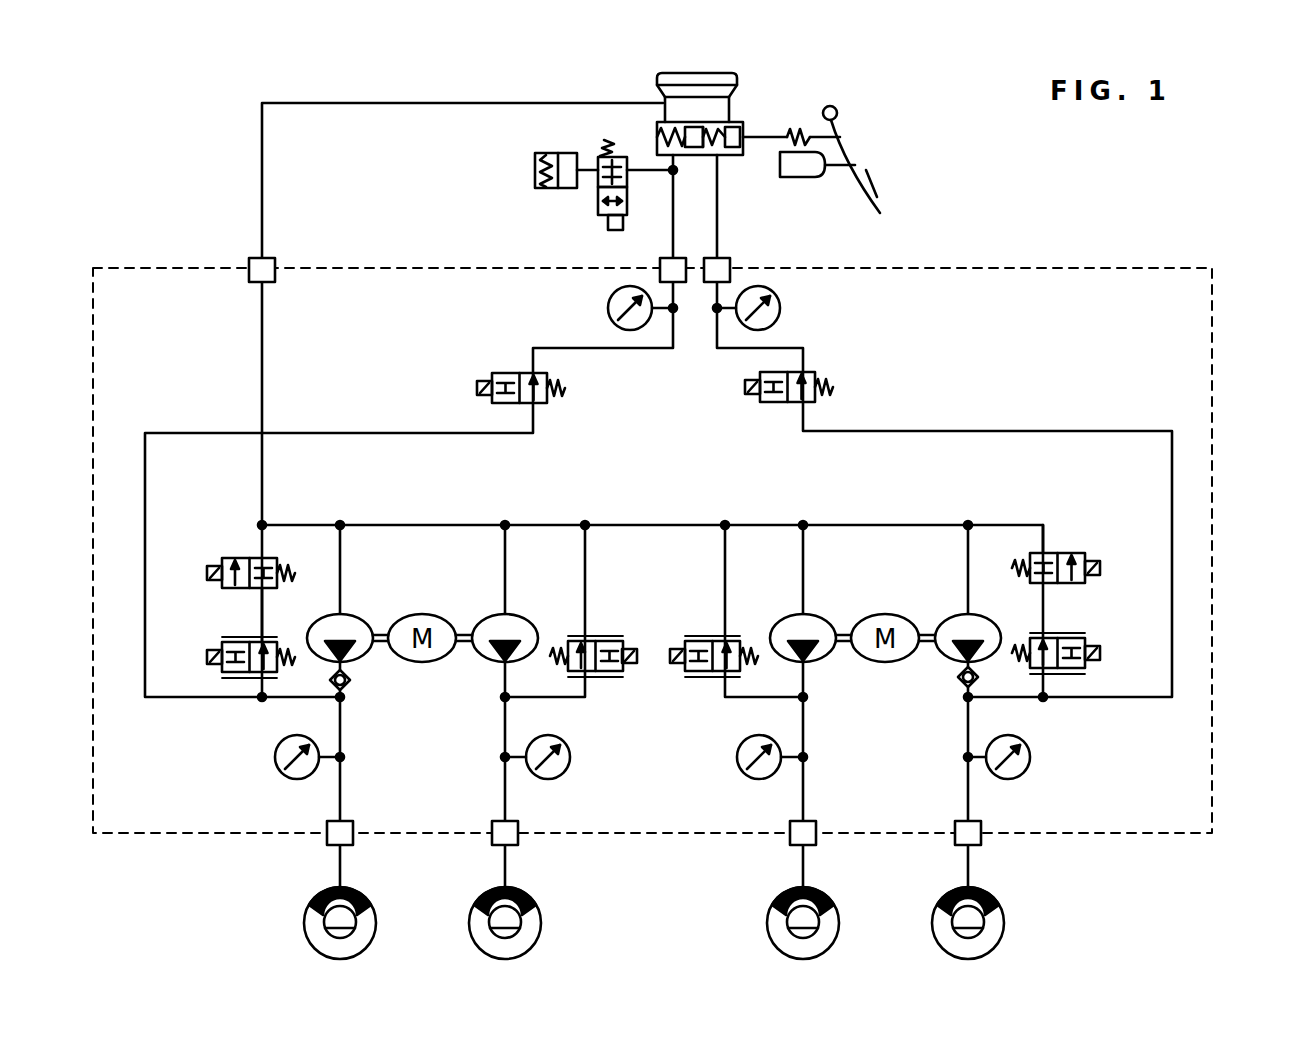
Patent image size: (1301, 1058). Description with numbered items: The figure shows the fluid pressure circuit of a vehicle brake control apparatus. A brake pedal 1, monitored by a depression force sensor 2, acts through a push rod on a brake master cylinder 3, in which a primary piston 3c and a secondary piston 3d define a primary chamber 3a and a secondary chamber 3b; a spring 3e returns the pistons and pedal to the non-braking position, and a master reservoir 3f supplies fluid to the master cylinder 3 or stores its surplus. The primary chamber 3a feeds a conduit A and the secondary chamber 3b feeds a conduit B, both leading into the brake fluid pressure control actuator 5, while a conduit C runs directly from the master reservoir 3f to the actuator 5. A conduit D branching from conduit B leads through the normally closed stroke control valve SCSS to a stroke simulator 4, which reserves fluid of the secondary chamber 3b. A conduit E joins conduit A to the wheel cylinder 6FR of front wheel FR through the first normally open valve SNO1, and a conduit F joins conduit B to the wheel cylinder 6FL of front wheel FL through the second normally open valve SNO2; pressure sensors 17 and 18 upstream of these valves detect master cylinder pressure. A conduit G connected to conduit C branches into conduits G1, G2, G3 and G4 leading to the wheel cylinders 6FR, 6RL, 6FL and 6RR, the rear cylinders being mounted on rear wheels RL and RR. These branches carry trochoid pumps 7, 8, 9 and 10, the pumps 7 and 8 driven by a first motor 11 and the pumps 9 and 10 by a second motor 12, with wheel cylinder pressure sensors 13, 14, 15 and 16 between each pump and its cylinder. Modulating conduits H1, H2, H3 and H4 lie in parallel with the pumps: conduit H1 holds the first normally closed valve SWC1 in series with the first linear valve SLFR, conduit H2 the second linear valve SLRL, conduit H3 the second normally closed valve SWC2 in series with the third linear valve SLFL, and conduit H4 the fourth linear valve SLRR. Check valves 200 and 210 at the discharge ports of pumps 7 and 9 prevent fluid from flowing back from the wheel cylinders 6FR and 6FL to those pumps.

The brake pedal 1 is at (870, 175).
The depression force sensor 2 is at (815, 177).
The brake master cylinder 3 is at (730, 106).
The primary chamber 3a is at (718, 135).
The secondary chamber 3b is at (673, 155).
The primary piston 3c is at (743, 125).
The secondary piston 3d is at (689, 128).
The spring 3e is at (717, 155).
The master reservoir 3f is at (665, 76).
The stroke simulator 4 is at (535, 172).
The brake fluid pressure control actuator 5 is at (1212, 278).
The first pump 7 is at (955, 663).
The second pump 8 is at (815, 663).
The third pump 9 is at (355, 663).
The fourth pump 10 is at (495, 663).
The first motor 11 is at (885, 663).
The second motor 12 is at (424, 663).
The first pressure sensor 13 is at (1008, 780).
The second pressure sensor 14 is at (752, 780).
The third pressure sensor 15 is at (290, 780).
The fourth pressure sensor 16 is at (553, 780).
The M/C pressure sensor 17 is at (780, 308).
The M/C pressure sensor 18 is at (608, 308).
The check valve 200 is at (972, 680).
The check valve 210 is at (332, 682).
The wheel cylinder 6FL is at (361, 895).
The wheel cylinder 6RR is at (526, 895).
The wheel cylinder 6RL is at (823, 895).
The wheel cylinder 6FR is at (990, 895).
The front wheel FL is at (376, 928).
The rear wheel RR is at (541, 928).
The rear wheel RL is at (839, 928).
The front wheel FR is at (1004, 928).
The conduit A is at (730, 258).
The conduit B is at (660, 258).
The conduit C is at (387, 103).
The conduit D is at (655, 170).
The conduit E is at (1092, 431).
The conduit F is at (333, 433).
The conduit G is at (262, 330).
The first conduit G1 is at (968, 560).
The second conduit G2 is at (803, 560).
The third conduit G3 is at (340, 560).
The fourth conduit G4 is at (505, 560).
The conduit H1 is at (995, 523).
The conduit H2 is at (725, 560).
The conduit H3 is at (262, 600).
The conduit H4 is at (585, 560).
The stroke control valve SCSS is at (598, 210).
The first normally open valve SNO1 is at (803, 372).
The second normally open valve SNO2 is at (492, 373).
The first normally closed valve SWC1 is at (1080, 553).
The second normally closed valve SWC2 is at (225, 558).
The third linear valve SLFL is at (262, 638).
The first linear valve SLFR is at (1050, 638).
The second linear valve SLRL is at (698, 640).
The fourth linear valve SLRR is at (602, 640).